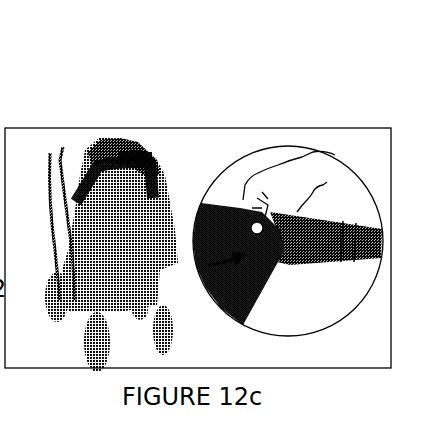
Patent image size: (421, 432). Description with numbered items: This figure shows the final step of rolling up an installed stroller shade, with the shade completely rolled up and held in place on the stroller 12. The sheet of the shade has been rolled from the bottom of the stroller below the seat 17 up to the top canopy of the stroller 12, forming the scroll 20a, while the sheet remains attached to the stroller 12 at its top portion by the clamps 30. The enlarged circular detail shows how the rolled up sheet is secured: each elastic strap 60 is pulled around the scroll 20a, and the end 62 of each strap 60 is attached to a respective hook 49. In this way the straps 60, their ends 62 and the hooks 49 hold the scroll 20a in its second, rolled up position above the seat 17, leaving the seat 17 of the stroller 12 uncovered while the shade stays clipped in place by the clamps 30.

The stroller 12 is at (160, 302).
The seat 17 is at (118, 258).
The scroll 20a is at (88, 183).
The end 62 is at (132, 155).
The hooks 49 is at (133, 156).
The elastic straps 60 is at (133, 156).
The clamps 30 is at (213, 267).